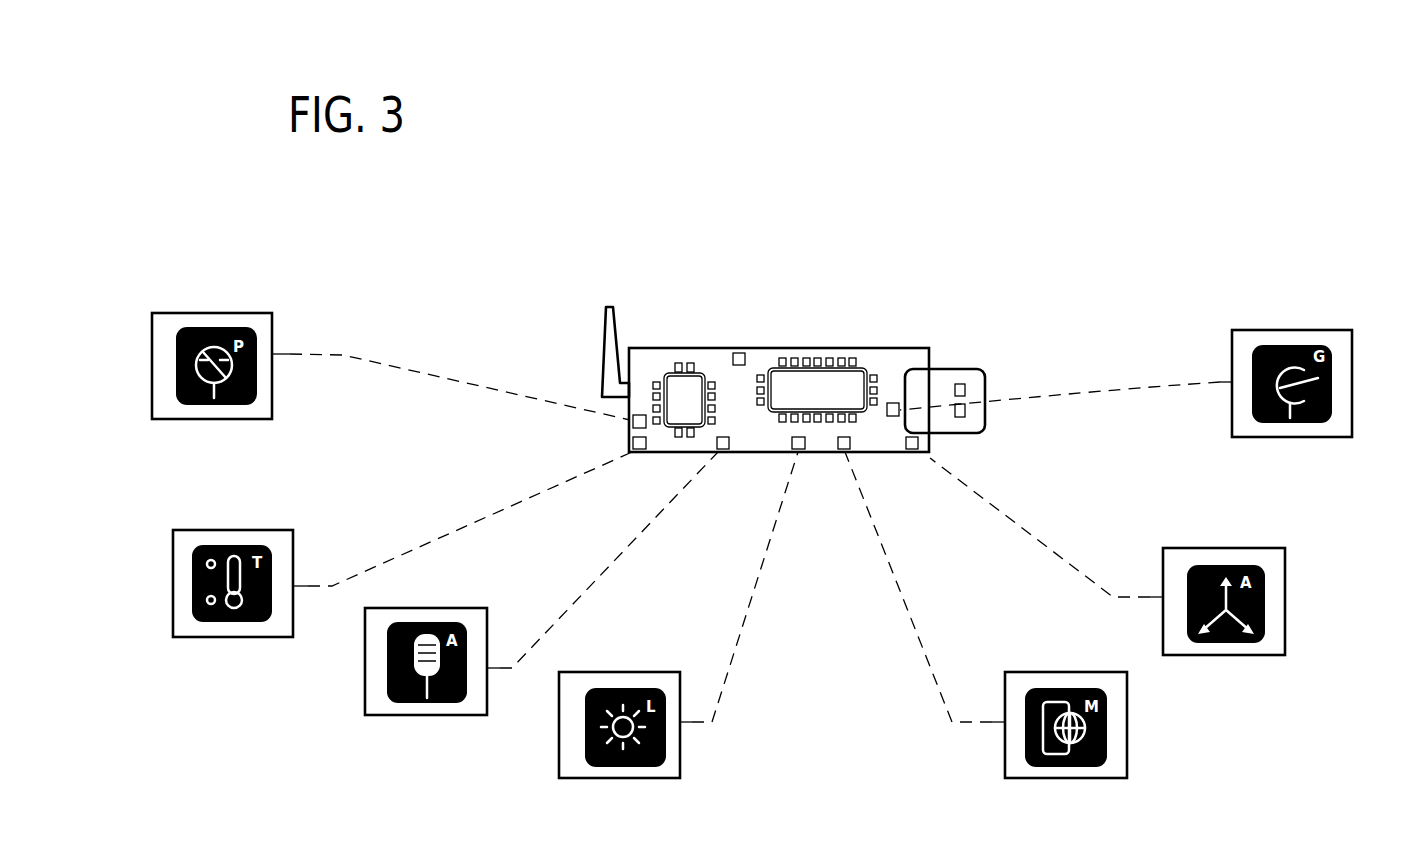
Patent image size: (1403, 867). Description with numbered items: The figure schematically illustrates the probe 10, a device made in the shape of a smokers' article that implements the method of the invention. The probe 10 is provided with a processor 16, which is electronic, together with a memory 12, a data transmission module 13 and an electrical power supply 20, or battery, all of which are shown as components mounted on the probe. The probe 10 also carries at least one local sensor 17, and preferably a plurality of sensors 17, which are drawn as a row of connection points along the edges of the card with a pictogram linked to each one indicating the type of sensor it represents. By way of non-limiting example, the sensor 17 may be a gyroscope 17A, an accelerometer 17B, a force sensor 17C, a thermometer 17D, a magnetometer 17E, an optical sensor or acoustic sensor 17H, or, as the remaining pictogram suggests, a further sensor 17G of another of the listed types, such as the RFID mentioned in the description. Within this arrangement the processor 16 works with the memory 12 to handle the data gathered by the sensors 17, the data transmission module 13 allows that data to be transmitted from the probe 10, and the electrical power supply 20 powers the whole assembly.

The probe 10 is at (1073, 279).
The memory 12 is at (684, 388).
The data transmission module 13 is at (604, 340).
The processor 16 is at (816, 387).
The local sensor 17 is at (771, 419).
The gyroscope 17A is at (893, 402).
The accelerometer 17B is at (919, 443).
The force sensor 17C is at (629, 428).
The thermometer 17D is at (639, 453).
The magnetometer 17E is at (856, 450).
The connector 17G is at (802, 453).
The optical sensor 17H is at (728, 453).
The electrical power supply 20 is at (746, 355).